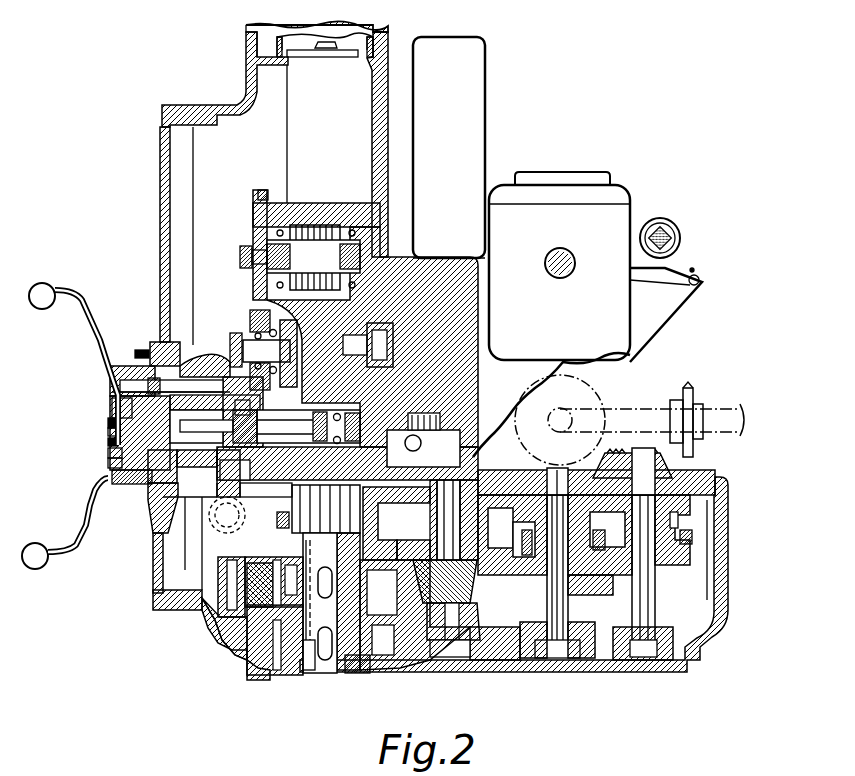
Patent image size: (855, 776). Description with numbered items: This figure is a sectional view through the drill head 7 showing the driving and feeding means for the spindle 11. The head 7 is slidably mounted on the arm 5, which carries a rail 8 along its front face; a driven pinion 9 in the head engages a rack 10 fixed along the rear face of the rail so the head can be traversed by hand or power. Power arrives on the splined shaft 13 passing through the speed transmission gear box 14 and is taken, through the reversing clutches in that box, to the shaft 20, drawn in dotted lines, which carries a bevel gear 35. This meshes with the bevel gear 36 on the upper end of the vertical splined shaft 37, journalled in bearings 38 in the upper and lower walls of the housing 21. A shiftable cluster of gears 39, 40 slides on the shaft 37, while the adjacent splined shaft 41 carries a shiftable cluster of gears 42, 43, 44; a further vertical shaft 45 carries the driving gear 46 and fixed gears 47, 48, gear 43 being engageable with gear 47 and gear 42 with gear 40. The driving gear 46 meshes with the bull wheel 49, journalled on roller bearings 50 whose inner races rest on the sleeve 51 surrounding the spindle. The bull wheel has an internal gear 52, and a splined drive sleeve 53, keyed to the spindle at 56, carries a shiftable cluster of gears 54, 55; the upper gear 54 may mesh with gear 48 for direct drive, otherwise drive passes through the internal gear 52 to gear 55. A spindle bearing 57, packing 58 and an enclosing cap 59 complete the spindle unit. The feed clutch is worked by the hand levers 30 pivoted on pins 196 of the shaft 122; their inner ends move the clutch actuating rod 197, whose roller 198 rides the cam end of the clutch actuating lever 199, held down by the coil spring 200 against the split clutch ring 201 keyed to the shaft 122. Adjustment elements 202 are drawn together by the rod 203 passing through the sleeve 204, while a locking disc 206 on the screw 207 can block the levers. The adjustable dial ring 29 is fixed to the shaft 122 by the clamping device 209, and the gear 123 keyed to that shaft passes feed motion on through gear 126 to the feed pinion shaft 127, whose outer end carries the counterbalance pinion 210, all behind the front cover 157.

The arm 5 is at (455, 290).
The drill head 7 is at (215, 100).
The rail 8 is at (380, 385).
The driven pinion 9 is at (560, 410).
The rack 10 is at (553, 414).
The spindle 11 is at (322, 690).
The splined shaft 13 is at (577, 265).
The speed transmission gear box 14 is at (608, 201).
The shaft 20 is at (725, 420).
The housing 21 is at (512, 665).
The adjustable dial ring 29 is at (150, 498).
The hand levers 30 is at (48, 285).
The bevel gear 35 is at (696, 390).
The bevel gear 36 is at (672, 468).
The vertical splined shaft 37 is at (655, 580).
The bearings 38 is at (672, 497).
The gear 39 is at (678, 520).
The gear 40 is at (692, 536).
The splined shaft 41 is at (568, 608).
The gear 42 is at (592, 578).
The gear 43 is at (598, 520).
The gear 44 is at (545, 482).
The vertical shaft 45 is at (470, 610).
The driving gear 46 is at (470, 585).
The gear 47 is at (497, 545).
The gear 48 is at (396, 523).
The bull wheel 49 is at (218, 580).
The roller bearings 50 is at (212, 628).
The sleeve 51 is at (250, 673).
The internal gear 52 is at (262, 548).
The splined drive sleeve 53 is at (278, 680).
The gear 54 is at (280, 520).
The gear 55 is at (262, 540).
The key 56 is at (306, 682).
The spindle bearing 57 is at (240, 645).
The packing 58 is at (352, 680).
The cap 59 is at (395, 672).
The shaft 122 is at (108, 454).
The gear 123 is at (266, 488).
The gear 126 is at (260, 192).
The shaft 127 is at (300, 240).
The front cover 157 is at (160, 258).
The pins 196 is at (108, 464).
The clutch actuating rod 197 is at (108, 422).
The roller 198 is at (112, 406).
The clutch actuating lever 199 is at (140, 356).
The coil spring 200 is at (216, 354).
The split clutch ring 201 is at (153, 520).
The adjustment elements 202 is at (208, 356).
The rod 203 is at (120, 382).
The sleeve 204 is at (112, 392).
The locking disc 206 is at (108, 442).
The screw 207 is at (108, 432).
The clamping device 209 is at (100, 478).
The pinion 210 is at (244, 250).